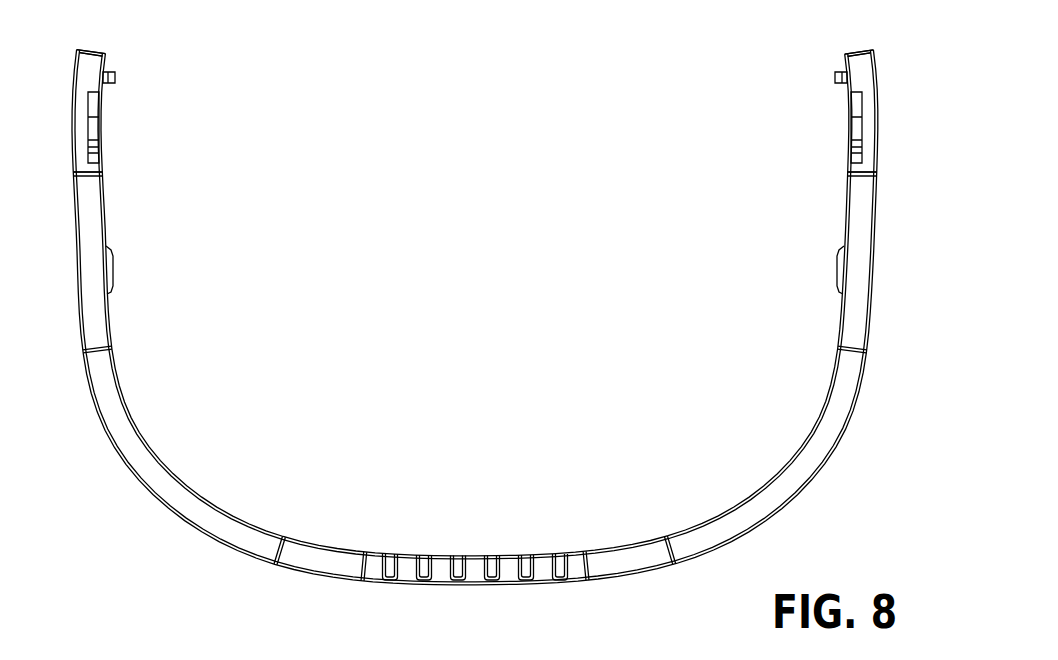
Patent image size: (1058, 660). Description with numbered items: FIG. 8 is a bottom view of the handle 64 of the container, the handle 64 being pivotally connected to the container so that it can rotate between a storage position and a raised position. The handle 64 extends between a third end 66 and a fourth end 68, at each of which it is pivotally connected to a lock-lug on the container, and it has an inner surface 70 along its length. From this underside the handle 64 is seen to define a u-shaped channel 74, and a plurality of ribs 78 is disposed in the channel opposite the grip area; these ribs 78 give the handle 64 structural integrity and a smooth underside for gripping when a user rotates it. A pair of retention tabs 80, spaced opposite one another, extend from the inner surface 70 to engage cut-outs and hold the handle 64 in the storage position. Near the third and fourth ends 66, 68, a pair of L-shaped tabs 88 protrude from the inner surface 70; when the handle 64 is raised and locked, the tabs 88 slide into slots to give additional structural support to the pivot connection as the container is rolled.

The handle 64 is at (184, 488).
The third end 66 is at (878, 72).
The fourth end 68 is at (75, 72).
The inner surface 70 is at (113, 370).
The u-shaped channel 74 is at (762, 523).
The ribs 78 is at (407, 562).
The retention tabs 80 is at (114, 268).
The tabs 88 is at (116, 78).